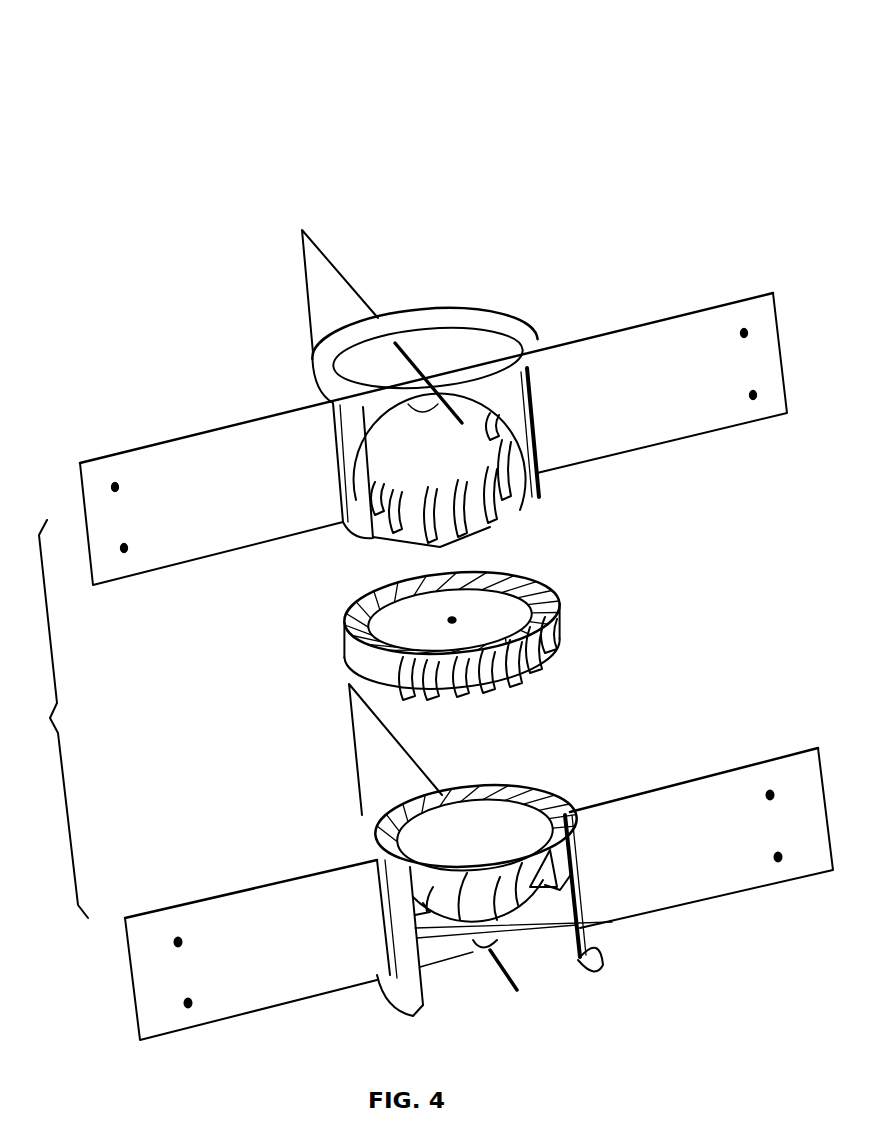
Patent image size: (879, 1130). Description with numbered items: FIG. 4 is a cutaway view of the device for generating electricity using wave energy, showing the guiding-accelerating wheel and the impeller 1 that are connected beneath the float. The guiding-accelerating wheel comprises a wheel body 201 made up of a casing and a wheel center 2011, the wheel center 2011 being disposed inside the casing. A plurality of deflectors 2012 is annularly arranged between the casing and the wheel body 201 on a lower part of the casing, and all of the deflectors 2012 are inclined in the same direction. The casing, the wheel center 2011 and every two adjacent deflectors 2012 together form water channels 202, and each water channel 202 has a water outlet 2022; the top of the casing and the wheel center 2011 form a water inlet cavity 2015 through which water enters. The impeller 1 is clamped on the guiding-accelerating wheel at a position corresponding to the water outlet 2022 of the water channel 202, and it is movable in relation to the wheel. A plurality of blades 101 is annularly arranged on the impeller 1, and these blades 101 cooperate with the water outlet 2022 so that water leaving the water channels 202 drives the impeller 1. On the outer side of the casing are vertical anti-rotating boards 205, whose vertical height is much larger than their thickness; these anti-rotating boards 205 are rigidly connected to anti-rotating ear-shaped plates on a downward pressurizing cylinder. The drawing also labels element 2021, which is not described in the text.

The impeller 1 is at (490, 618).
The blades 101 is at (522, 676).
The wheel body 201 is at (527, 303).
The wheel center 2011 is at (427, 465).
The deflectors 2012 is at (533, 497).
The water inlet cavity 2015 is at (450, 355).
The water channels 202 is at (405, 508).
The impeller blades 2021 is at (413, 487).
The water outlet 2022 is at (422, 538).
The vertical anti-rotating boards 205 is at (623, 365).